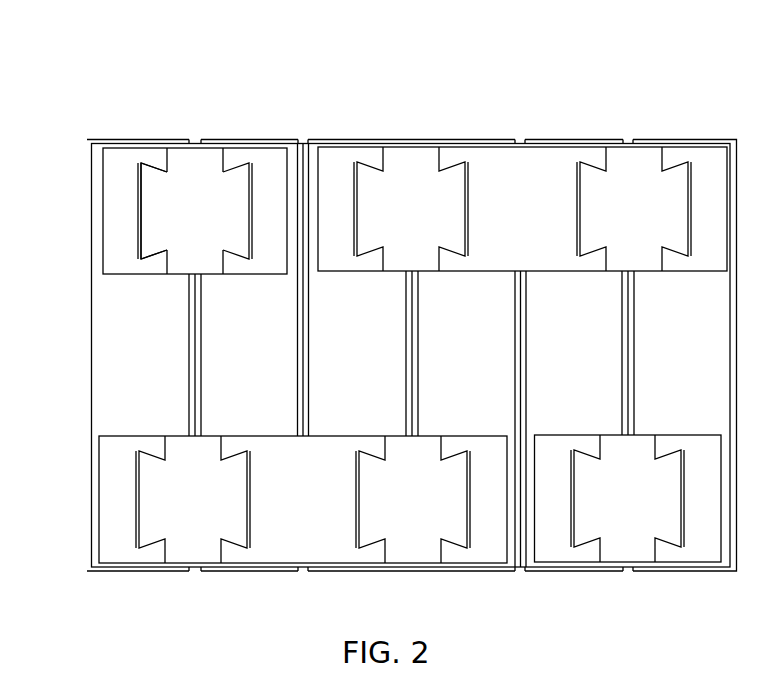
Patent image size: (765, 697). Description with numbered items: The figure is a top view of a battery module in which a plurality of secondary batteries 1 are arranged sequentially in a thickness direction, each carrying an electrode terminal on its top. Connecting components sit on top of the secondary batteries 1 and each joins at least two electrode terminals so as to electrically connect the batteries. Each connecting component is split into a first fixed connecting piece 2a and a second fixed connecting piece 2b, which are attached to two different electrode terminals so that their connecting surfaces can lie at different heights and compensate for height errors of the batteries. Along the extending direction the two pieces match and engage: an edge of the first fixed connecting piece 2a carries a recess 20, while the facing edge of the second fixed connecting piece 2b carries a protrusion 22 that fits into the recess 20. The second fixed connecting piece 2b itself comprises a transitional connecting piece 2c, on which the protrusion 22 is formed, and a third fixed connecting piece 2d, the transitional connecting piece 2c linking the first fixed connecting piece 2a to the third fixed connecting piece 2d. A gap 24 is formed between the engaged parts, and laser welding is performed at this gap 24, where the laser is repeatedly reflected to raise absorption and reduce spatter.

The secondary battery 1 is at (120, 377).
The first fixed connecting piece 2a is at (119, 168).
The second fixed connecting piece 2b is at (255, 145).
The transitional connecting piece 2c is at (187, 168).
The third fixed connecting piece 2d is at (265, 163).
The recess 20 is at (137, 197).
The protrusion 22 is at (147, 227).
The gap 24 is at (138, 210).